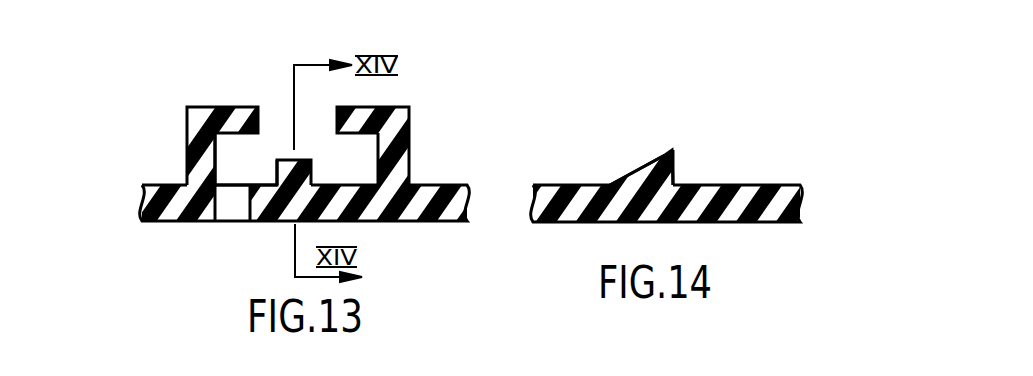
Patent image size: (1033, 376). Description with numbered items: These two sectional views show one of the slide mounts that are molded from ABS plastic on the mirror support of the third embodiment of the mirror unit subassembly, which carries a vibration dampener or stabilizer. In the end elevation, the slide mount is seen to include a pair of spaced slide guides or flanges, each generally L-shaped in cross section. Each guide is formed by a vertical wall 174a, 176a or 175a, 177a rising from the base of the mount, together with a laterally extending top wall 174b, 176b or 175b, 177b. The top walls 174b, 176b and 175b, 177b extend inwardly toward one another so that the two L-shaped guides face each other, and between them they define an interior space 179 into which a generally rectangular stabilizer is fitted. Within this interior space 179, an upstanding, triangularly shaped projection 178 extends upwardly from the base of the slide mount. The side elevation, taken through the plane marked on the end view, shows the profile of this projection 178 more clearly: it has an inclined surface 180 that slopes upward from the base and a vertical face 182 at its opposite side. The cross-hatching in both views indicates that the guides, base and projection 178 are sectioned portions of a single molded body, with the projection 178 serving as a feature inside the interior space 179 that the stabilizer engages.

In FIG. 13, the vertical wall 174a is at (131, 153).
In FIG. 13, the vertical wall 175a is at (187, 146).
In FIG. 13, the top wall 174b is at (171, 74).
In FIG. 13, the top wall 175b is at (208, 107).
In FIG. 13, the vertical wall 176a is at (454, 143).
In FIG. 13, the vertical wall 177a is at (410, 140).
In FIG. 13, the top wall 176b is at (451, 92).
In FIG. 13, the top wall 177b is at (393, 105).
In FIG. 13, the projection 178 is at (313, 168).
In FIG. 14, the projection 178 is at (667, 146).
In FIG. 13, the interior space 179 is at (245, 155).
In FIG. 14, the inclined surface 180 is at (637, 168).
In FIG. 14, the vertical face 182 is at (675, 163).